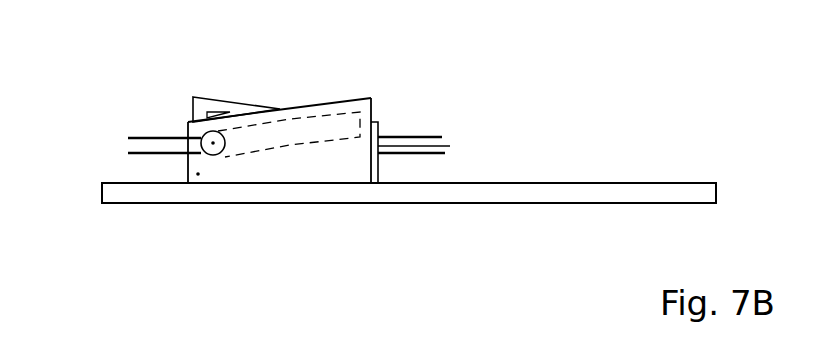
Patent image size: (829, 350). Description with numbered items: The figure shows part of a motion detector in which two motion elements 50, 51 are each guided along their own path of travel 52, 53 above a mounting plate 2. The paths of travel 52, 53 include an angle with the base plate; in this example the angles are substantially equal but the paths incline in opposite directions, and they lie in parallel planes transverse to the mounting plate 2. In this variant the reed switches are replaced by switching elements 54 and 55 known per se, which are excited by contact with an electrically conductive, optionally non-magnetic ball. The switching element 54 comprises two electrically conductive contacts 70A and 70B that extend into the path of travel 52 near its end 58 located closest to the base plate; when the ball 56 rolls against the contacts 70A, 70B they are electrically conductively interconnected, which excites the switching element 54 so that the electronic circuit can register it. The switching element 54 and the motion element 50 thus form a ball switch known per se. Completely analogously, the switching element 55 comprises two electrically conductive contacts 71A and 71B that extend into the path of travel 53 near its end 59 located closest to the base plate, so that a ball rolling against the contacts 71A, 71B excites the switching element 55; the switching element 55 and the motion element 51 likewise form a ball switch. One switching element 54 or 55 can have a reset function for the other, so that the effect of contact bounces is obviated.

The mounting plate 2 is at (554, 192).
The motion element 50 is at (365, 98).
The motion element 51 is at (208, 66).
The path of travel 52 is at (320, 115).
The path of travel 53 is at (212, 131).
The switching element 54 is at (198, 174).
The switching element 55 is at (407, 97).
The electrically conductive ball 56 is at (213, 155).
The end of the path of travel 58 is at (140, 97).
The end of the path of travel 59 is at (450, 146).
The electrically conductive contact 70A is at (111, 118).
The electrically conductive contact 70B is at (111, 148).
The electrically conductive contact 71A is at (446, 74).
The electrically conductive contact 71B is at (427, 153).